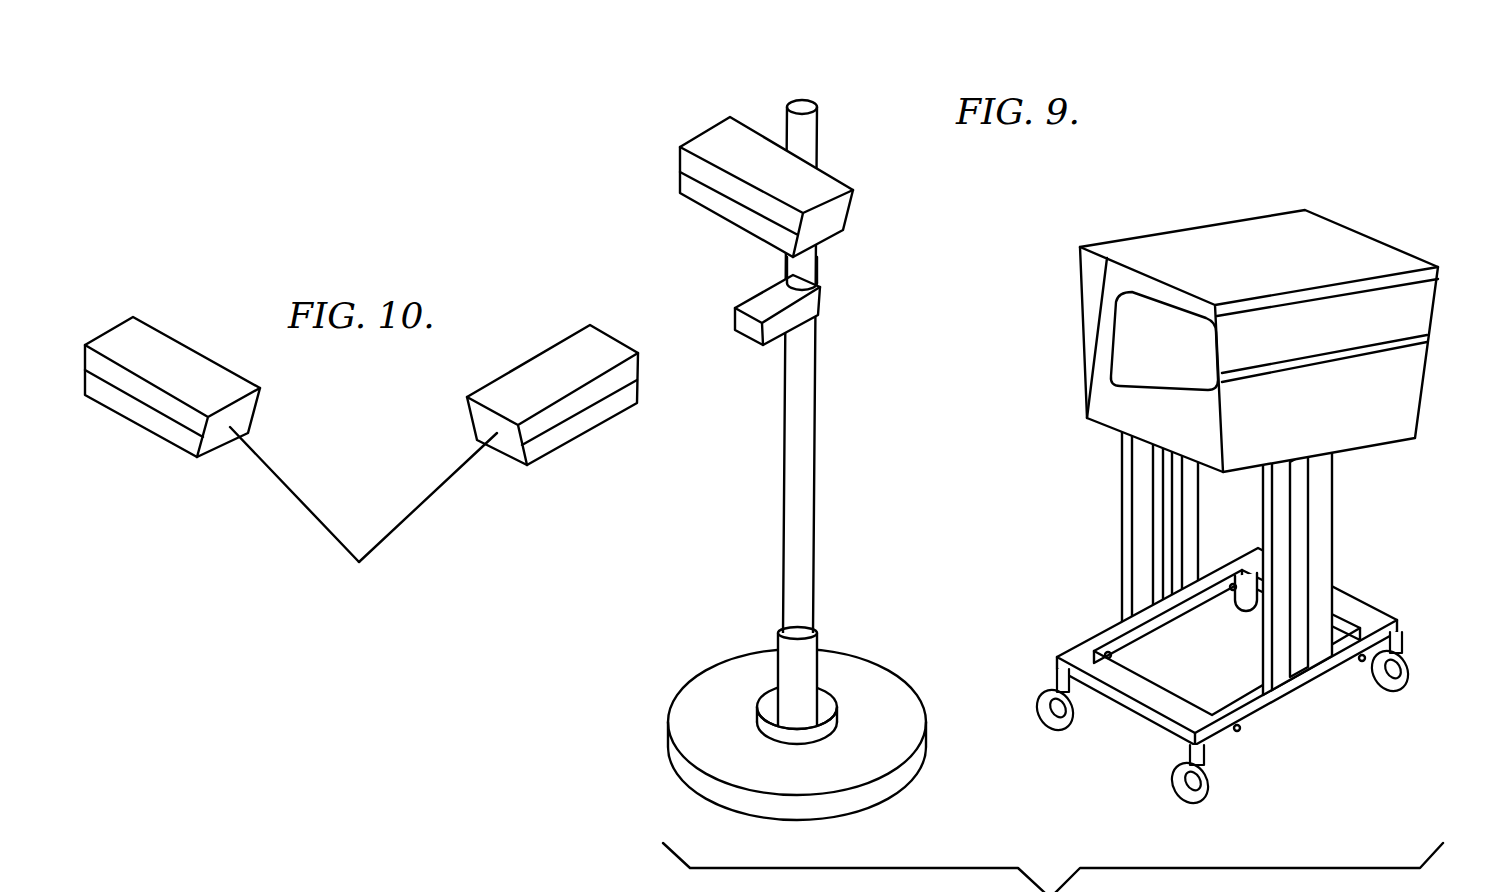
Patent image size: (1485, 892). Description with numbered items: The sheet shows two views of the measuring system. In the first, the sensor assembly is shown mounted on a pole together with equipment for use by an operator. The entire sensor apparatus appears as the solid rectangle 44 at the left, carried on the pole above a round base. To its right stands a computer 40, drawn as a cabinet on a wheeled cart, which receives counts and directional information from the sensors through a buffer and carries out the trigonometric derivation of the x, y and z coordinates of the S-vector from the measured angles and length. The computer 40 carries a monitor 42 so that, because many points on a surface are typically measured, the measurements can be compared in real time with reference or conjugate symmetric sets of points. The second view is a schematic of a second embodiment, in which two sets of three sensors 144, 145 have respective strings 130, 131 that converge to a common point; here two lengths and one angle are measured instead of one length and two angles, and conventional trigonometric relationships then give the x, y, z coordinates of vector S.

In FIG. 9, the computer 40 is at (1238, 237).
In FIG. 9, the monitor 42 is at (1132, 343).
In FIG. 9, the solid rectangle 44 is at (723, 130).
In FIG. 10, the set of three sensors 144 is at (177, 433).
In FIG. 10, the set of three sensors 145 is at (550, 443).
In FIG. 10, the string 130 is at (298, 518).
In FIG. 10, the string 131 is at (412, 530).